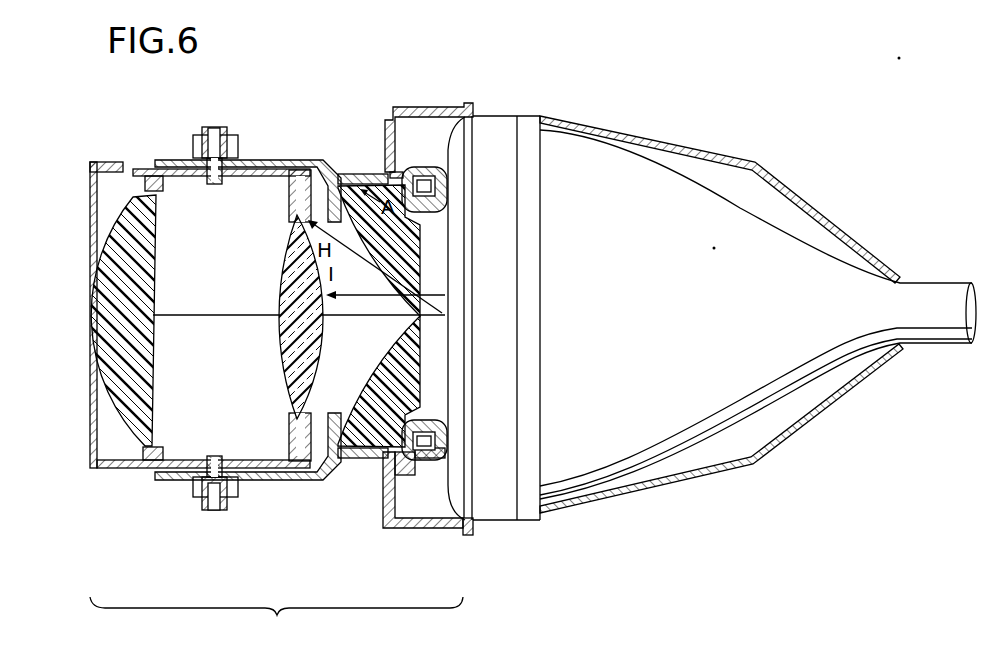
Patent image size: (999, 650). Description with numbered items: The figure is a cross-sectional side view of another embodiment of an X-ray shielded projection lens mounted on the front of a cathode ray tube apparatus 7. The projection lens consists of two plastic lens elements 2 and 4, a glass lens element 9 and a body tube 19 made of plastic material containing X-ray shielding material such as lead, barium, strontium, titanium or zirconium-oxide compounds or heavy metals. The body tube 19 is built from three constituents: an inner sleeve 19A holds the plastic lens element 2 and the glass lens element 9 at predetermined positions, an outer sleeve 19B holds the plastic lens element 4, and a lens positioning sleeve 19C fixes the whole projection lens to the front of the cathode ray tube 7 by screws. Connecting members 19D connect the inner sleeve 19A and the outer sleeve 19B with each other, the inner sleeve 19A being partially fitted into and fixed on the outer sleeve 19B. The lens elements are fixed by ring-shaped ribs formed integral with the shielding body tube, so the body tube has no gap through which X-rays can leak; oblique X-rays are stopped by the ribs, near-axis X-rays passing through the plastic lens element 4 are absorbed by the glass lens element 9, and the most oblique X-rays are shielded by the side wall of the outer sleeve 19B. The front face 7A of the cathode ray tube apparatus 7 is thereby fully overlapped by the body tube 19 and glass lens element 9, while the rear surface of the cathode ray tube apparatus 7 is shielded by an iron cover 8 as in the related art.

The plastic lens element 2 is at (125, 385).
The plastic lens element 4 is at (347, 465).
The cathode ray tube apparatus 7 is at (586, 162).
The front face 7A is at (425, 455).
The iron cover 8 is at (637, 493).
The glass lens element 9 is at (300, 372).
The body tube 19 is at (276, 622).
The inner sleeve 19A is at (108, 468).
The outer sleeve 19B is at (266, 480).
The lens positioning sleeve 19C is at (395, 531).
The connecting members 19D is at (222, 126).